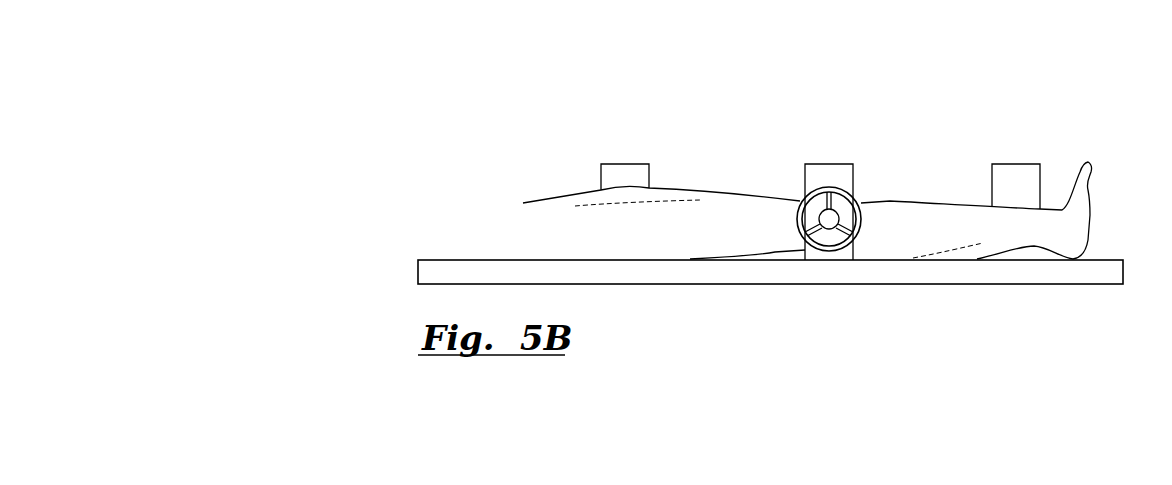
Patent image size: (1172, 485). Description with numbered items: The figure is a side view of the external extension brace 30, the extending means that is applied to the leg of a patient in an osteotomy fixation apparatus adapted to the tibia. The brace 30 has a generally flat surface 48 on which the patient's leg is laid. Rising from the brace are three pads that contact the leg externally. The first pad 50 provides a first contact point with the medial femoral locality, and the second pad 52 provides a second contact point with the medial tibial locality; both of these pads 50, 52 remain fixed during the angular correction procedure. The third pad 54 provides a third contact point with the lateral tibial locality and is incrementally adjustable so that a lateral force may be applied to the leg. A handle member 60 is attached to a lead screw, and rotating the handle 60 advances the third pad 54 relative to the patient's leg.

The external extension brace 30 is at (806, 100).
The flat surface 48 is at (462, 258).
The first pad 50 is at (622, 160).
The second pad 52 is at (1015, 177).
The third pad 54 is at (838, 167).
The handle member 60 is at (860, 228).